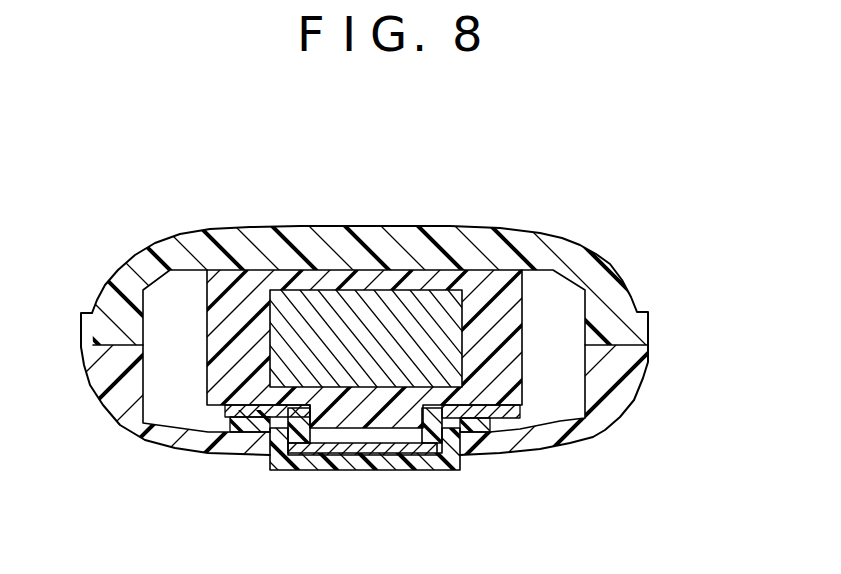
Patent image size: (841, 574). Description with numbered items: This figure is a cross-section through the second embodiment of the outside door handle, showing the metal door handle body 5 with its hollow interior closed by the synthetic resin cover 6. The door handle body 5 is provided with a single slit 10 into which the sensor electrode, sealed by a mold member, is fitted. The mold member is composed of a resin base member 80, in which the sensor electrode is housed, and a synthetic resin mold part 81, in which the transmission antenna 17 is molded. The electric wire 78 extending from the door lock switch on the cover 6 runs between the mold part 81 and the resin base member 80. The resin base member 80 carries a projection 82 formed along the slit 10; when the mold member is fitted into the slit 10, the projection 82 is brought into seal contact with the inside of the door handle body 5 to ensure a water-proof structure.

The door handle body 5 is at (649, 362).
The cover 6 is at (243, 245).
The slit 10 is at (462, 440).
The transmission antenna 17 is at (387, 310).
The wire 78 is at (292, 430).
The resin base member 80 is at (355, 456).
The mold part 81 is at (500, 298).
The projection 82 is at (235, 437).